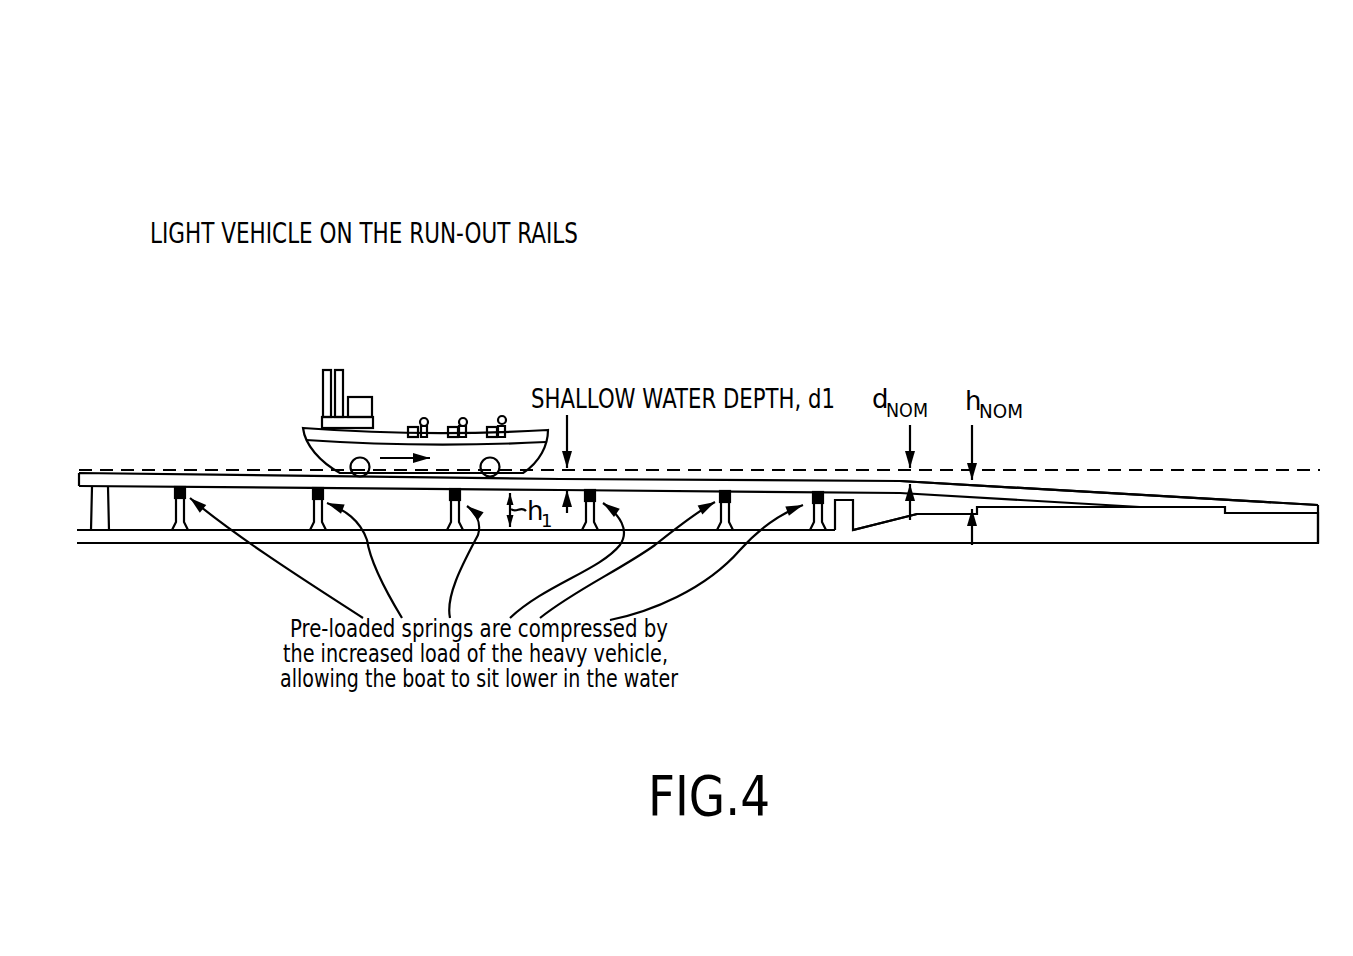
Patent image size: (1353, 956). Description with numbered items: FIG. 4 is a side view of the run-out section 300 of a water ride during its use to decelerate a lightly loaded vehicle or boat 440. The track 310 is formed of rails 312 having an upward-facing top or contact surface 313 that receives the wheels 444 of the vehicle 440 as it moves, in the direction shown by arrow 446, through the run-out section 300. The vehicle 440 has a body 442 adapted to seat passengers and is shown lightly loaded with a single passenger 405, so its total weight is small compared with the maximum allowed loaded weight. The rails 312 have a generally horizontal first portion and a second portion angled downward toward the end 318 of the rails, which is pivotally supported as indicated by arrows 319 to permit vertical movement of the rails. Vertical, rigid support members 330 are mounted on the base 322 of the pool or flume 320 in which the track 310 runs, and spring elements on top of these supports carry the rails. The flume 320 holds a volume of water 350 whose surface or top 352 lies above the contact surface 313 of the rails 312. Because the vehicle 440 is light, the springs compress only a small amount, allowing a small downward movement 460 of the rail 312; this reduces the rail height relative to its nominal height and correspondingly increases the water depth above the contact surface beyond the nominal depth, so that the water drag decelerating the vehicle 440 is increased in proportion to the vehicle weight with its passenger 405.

The run-out section 300 is at (280, 147).
The track 310 is at (73, 489).
The rails 312 is at (160, 492).
The top or contact surface 313 is at (207, 476).
The end of the rails 318 is at (1300, 545).
The arrows 319 is at (1283, 517).
The pool or flume 320 is at (874, 516).
The base 322 is at (778, 525).
The support member 330 is at (820, 530).
The water 350 is at (1150, 496).
The surface or top of the water 352 is at (1222, 463).
The passenger 405 is at (506, 422).
The vehicle or boat 440 is at (526, 360).
The body 442 is at (323, 452).
The wheels 444 is at (362, 470).
The arrow 446 is at (392, 457).
The downward movement 460 is at (137, 505).